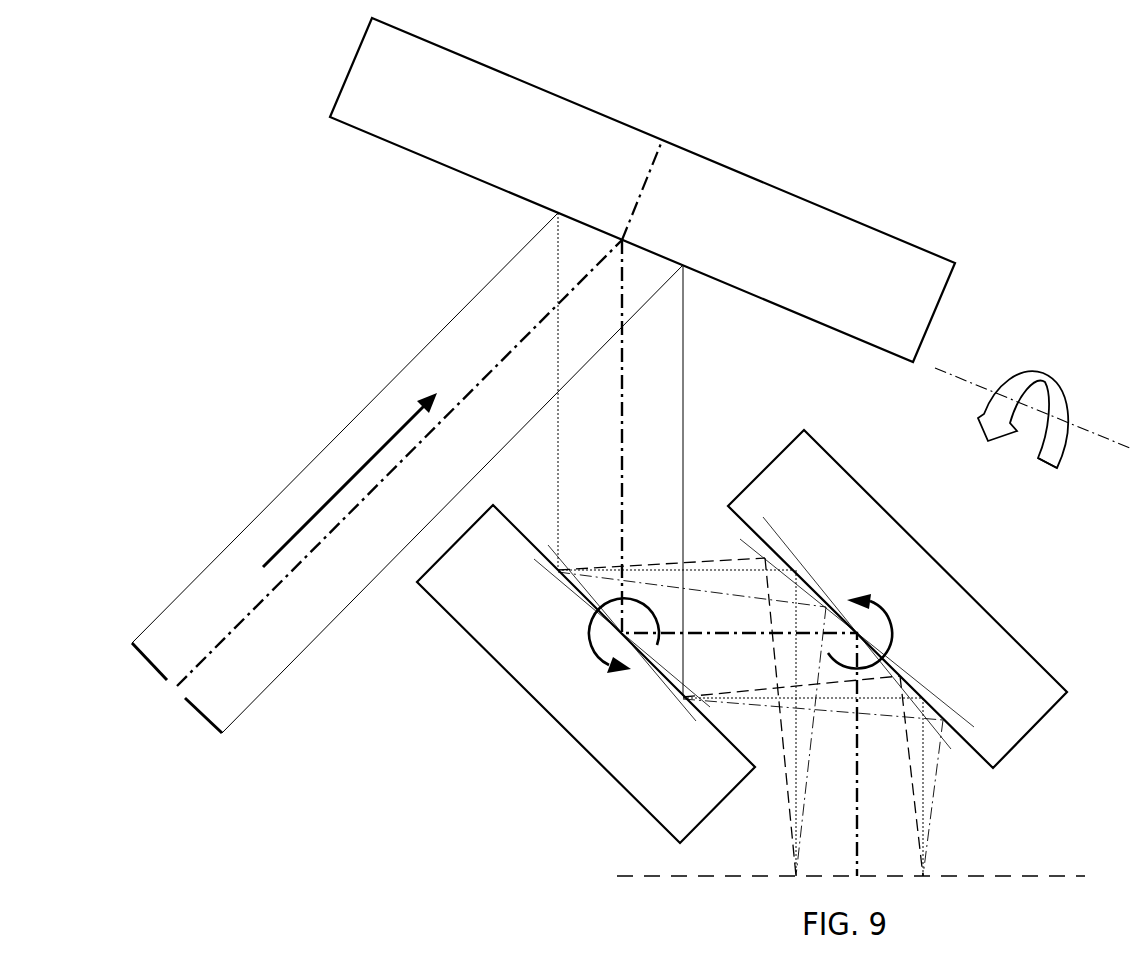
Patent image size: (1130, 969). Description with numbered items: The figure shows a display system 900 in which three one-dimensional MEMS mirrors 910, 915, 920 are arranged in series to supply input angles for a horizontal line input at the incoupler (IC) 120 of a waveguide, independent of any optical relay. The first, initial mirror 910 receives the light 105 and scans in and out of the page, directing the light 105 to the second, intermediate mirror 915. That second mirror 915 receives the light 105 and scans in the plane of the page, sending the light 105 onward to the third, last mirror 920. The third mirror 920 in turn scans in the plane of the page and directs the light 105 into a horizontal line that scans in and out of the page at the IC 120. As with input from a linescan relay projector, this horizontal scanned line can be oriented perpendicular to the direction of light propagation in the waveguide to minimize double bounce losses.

The display system 900 is at (1062, 147).
The first 1-D MEMS mirror 910 is at (811, 197).
The second 1-D MEMS mirror 915 is at (546, 711).
The third 1-D MEMS mirror 920 is at (1034, 729).
The light 105 is at (287, 413).
The IC 120 is at (1005, 877).